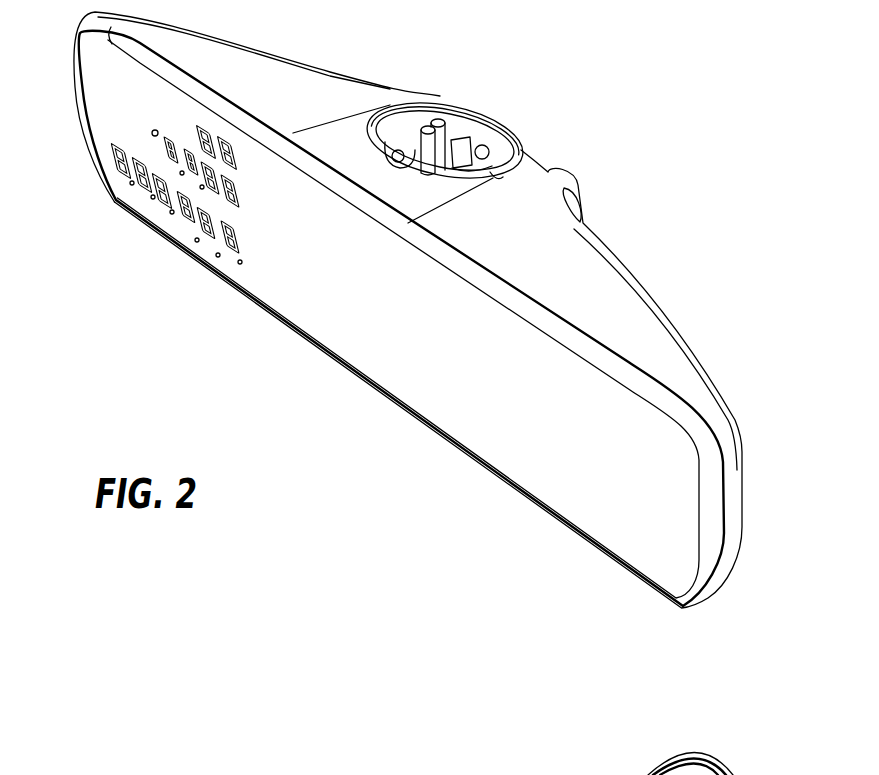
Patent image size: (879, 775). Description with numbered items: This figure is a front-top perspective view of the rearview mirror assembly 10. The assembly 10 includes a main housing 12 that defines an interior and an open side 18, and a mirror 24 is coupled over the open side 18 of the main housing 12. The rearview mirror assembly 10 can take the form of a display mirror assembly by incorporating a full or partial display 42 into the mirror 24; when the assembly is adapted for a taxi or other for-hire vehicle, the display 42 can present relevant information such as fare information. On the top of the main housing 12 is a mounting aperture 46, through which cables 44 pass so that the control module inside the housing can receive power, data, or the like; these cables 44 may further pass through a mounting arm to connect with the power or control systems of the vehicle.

The rearview mirror assembly 10 is at (444, 310).
The main housing 12 is at (652, 279).
The open side 18 is at (723, 525).
The mirror 24 is at (438, 398).
The display 42 is at (172, 216).
The cables 44 is at (430, 138).
The mounting aperture 46 is at (503, 120).